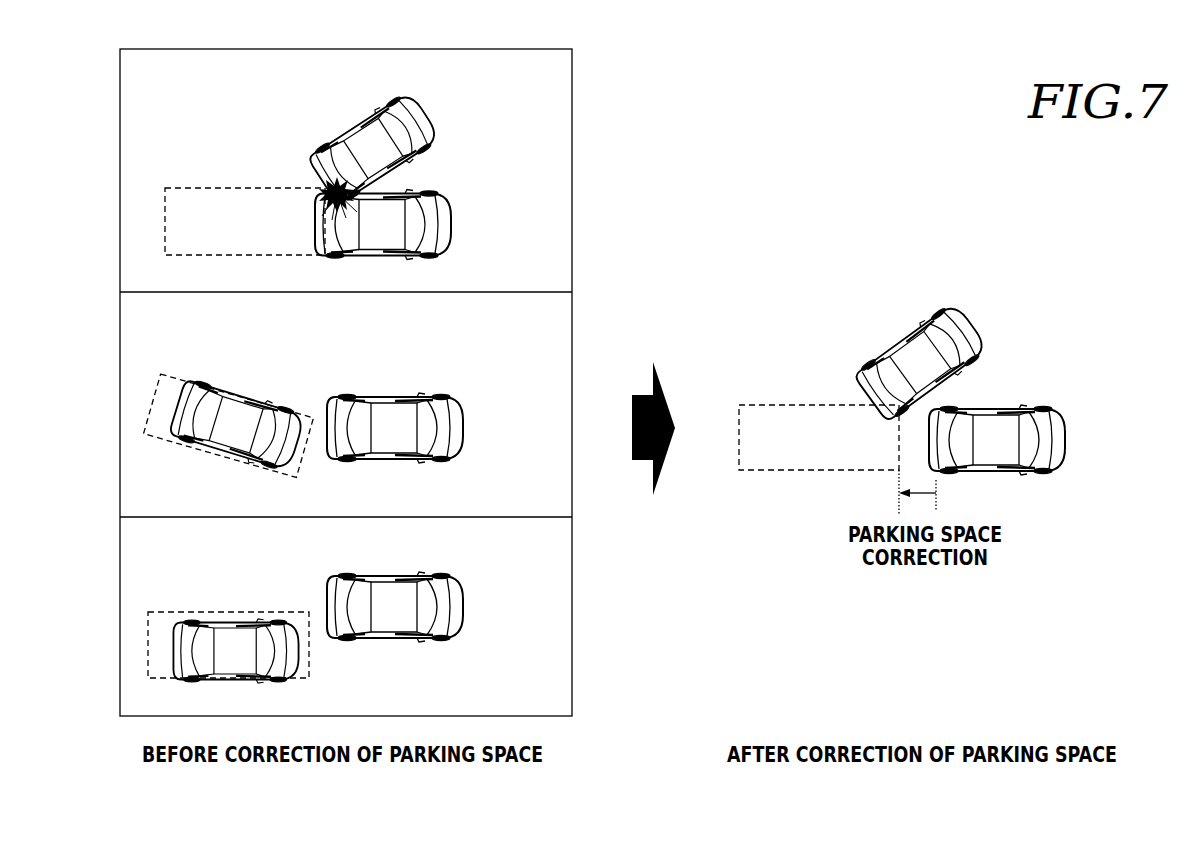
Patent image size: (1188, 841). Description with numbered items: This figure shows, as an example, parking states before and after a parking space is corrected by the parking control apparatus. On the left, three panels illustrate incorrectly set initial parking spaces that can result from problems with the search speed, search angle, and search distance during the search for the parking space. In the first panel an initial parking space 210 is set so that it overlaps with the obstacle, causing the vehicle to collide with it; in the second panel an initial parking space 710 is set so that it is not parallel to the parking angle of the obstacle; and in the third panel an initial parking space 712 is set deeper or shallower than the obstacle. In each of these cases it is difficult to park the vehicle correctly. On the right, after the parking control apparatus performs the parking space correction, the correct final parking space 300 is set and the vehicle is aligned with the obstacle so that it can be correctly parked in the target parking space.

The initial parking space 210 is at (215, 187).
The final parking space 300 is at (767, 405).
The initial parking space 710 is at (172, 373).
The initial parking space 712 is at (170, 612).